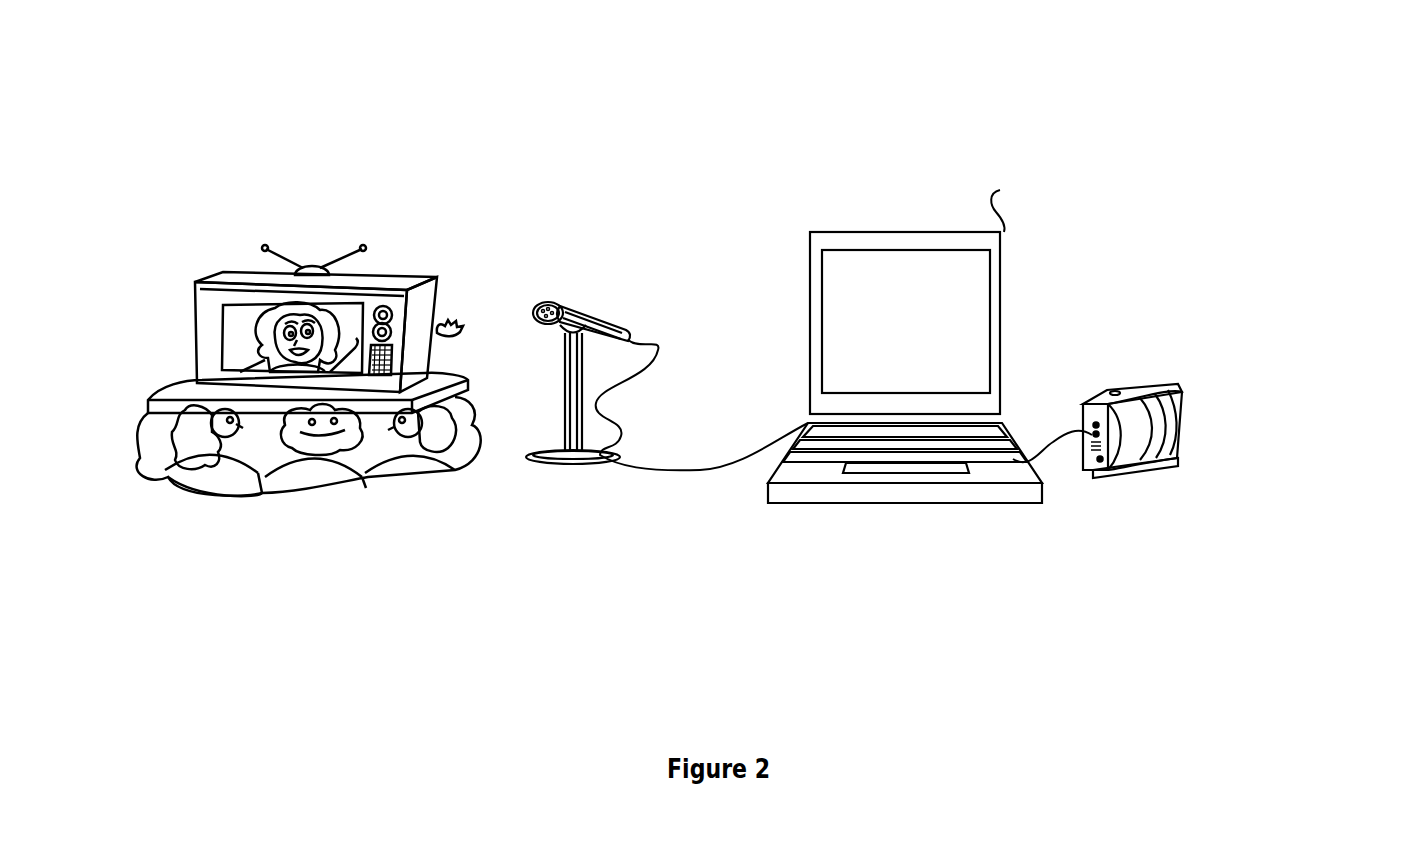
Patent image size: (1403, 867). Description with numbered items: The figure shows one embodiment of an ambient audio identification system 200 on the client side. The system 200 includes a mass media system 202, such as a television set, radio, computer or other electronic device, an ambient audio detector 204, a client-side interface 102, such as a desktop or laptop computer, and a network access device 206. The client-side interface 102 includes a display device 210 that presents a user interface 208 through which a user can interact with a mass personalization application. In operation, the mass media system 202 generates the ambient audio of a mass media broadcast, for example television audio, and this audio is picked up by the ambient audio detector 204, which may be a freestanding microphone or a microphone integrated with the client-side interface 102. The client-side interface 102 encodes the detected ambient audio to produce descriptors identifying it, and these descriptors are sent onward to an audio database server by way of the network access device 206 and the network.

The ambient audio identification system 200 is at (715, 78).
The mass media system 202 is at (300, 603).
The ambient audio detector 204 is at (645, 298).
The client-side interface 102 is at (930, 592).
The user interface 208 is at (925, 356).
The network access device 206 is at (1230, 371).
The display device 210 is at (1011, 196).